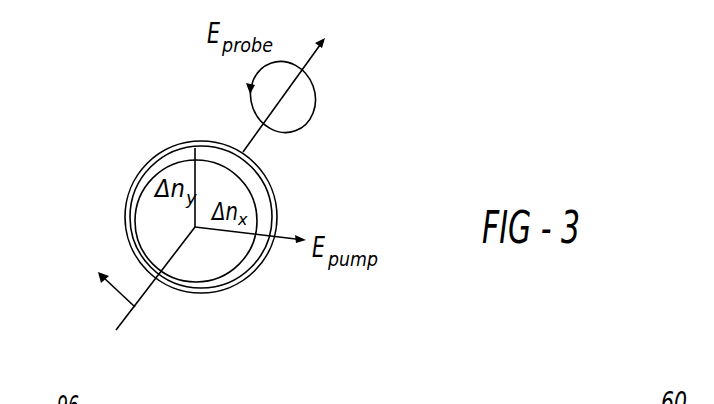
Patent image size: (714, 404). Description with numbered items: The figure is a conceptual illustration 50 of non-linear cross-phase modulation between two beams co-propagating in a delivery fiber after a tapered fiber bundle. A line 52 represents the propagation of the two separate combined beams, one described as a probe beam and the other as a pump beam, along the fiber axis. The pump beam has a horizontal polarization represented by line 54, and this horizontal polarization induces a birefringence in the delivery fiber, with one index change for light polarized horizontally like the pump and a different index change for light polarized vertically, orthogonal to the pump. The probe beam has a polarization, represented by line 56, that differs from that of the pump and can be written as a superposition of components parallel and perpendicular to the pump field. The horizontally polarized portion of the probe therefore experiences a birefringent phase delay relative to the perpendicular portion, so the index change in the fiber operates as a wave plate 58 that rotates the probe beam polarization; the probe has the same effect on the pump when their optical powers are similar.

The conceptual illustration 50 is at (432, 98).
The line representing beam propagation 52 is at (243, 150).
The pump beam polarization line 54 is at (278, 237).
The probe beam polarization line 56 is at (113, 287).
The wave plate 58 is at (145, 197).